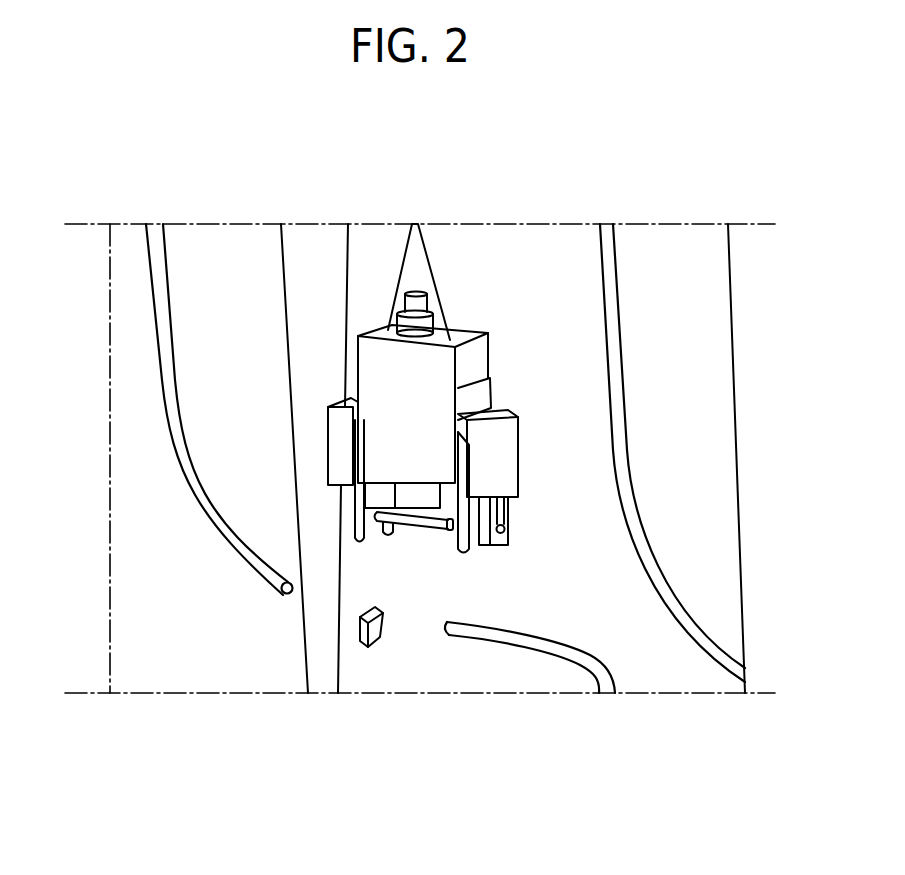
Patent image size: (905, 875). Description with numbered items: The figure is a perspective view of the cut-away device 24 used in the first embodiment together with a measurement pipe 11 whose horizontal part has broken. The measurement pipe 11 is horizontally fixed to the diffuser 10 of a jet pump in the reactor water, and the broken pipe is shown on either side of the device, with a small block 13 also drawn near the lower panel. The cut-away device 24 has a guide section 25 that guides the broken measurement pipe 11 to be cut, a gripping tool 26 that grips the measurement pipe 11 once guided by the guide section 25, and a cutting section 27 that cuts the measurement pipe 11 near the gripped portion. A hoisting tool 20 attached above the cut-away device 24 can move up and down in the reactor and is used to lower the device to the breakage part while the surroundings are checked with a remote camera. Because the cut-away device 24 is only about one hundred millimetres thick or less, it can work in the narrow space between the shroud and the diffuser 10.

The diffuser 10 is at (218, 678).
The measurement pipe 11 is at (163, 372).
The mounting block 13 is at (370, 648).
The hoisting tool 20 is at (430, 257).
The cut-away device 24 is at (489, 335).
The guide section 25 is at (382, 495).
The gripping tool 26 is at (520, 512).
The cutting section 27 is at (448, 490).